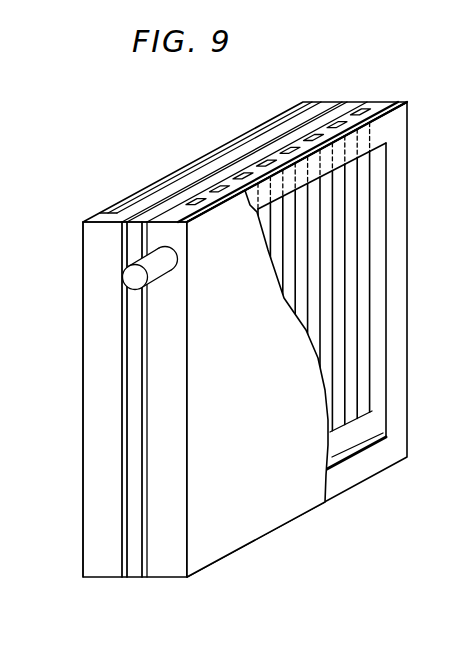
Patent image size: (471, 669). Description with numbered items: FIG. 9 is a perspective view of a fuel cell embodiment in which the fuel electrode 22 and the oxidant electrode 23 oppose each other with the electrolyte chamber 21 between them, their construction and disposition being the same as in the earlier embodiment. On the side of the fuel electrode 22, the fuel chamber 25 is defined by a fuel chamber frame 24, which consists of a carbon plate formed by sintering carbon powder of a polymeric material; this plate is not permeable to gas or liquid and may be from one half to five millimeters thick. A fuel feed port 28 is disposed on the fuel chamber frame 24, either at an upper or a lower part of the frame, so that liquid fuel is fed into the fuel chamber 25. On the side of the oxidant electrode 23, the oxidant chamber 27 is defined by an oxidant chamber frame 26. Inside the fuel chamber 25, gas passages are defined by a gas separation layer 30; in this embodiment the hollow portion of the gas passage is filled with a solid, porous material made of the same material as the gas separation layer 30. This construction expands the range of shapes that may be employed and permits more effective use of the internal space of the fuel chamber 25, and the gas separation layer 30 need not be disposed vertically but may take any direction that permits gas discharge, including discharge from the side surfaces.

The electrolyte chamber 21 is at (133, 572).
The fuel electrode 22 is at (147, 572).
The oxidant electrode 23 is at (125, 572).
The fuel chamber frame 24 is at (253, 522).
The fuel chamber 25 is at (352, 437).
The oxidant chamber frame 26 is at (107, 572).
The oxidant chamber 27 is at (172, 190).
The fuel feed port 28 is at (128, 276).
The gas separation layer 30 is at (348, 117).